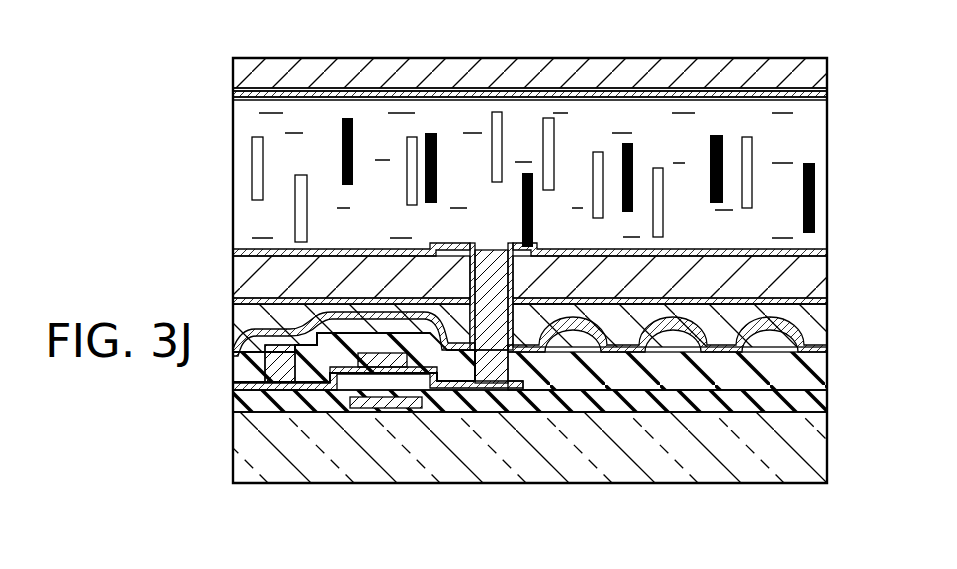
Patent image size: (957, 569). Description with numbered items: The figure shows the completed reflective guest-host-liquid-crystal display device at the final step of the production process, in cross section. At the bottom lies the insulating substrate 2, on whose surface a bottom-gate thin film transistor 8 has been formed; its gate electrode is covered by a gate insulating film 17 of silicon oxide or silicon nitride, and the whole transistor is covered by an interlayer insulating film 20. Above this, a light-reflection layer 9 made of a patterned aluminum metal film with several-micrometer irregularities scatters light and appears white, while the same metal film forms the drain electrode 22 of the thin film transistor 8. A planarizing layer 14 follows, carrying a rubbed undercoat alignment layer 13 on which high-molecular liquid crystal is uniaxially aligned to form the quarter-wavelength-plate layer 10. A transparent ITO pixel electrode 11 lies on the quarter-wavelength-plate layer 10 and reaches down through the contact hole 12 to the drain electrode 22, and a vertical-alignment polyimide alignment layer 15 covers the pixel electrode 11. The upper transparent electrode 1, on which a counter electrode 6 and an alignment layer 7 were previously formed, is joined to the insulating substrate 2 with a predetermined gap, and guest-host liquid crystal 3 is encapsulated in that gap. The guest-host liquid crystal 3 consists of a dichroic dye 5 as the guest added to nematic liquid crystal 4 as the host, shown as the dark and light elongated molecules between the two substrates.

The transparent electrode 1 is at (815, 76).
The counter electrode 6 is at (820, 92).
The alignment layer 7 is at (822, 108).
The guest-host liquid crystal 3 is at (800, 146).
The dichroic dye 5 is at (340, 132).
The nematic liquid crystal 4 is at (295, 217).
The contact hole 12 is at (489, 252).
The alignment layer 15 is at (815, 234).
The pixel electrode 11 is at (800, 262).
The quarter-wavelength-plate layer 10 is at (812, 284).
The undercoat alignment layer 13 is at (813, 308).
The planarizing layer 14 is at (810, 326).
The light-reflection layer 9 is at (813, 341).
The interlayer insulating film 20 is at (818, 373).
The gate insulating film 17 is at (818, 403).
The insulating substrate 2 is at (807, 440).
The thin film transistor 8 is at (384, 416).
The drain electrode 22 is at (497, 375).